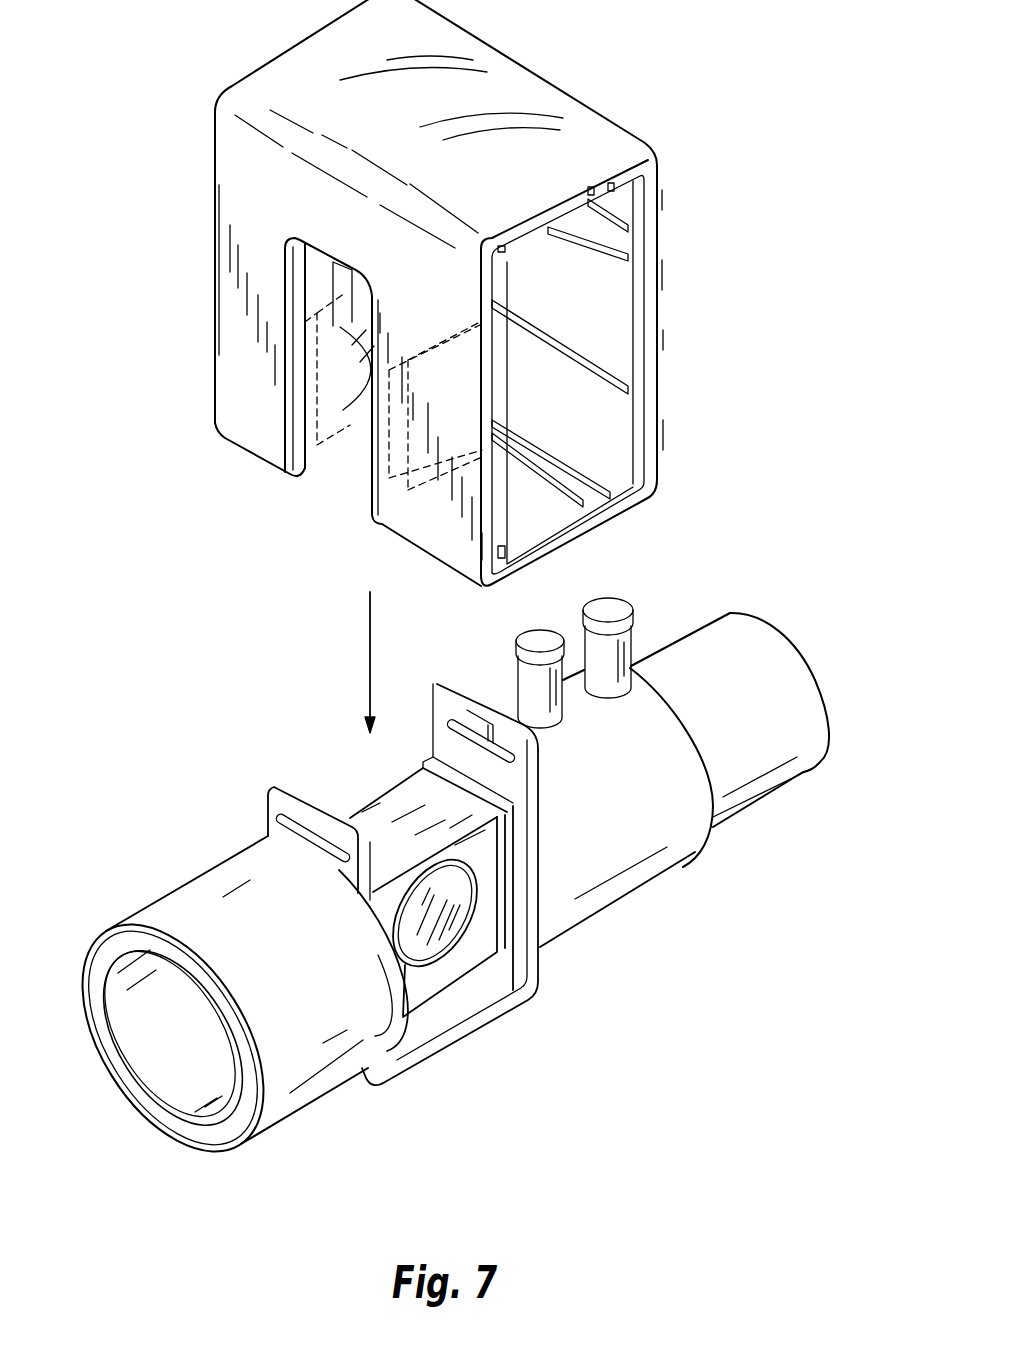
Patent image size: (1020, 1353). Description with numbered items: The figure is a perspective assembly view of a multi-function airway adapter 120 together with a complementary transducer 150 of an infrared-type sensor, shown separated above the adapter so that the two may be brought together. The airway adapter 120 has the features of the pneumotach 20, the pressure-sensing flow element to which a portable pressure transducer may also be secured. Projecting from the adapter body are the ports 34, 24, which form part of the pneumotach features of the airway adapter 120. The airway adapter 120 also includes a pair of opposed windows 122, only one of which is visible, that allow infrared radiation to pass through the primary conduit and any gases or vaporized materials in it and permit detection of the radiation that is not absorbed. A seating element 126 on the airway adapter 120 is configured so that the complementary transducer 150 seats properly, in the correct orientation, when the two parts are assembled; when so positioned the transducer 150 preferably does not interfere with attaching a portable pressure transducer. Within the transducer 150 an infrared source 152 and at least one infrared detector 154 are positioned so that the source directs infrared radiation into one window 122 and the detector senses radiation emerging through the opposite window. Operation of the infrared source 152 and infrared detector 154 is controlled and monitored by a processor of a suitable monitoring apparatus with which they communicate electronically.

The transducer 150 is at (173, 238).
The infrared detector 154 is at (283, 417).
The infrared source 152 is at (368, 493).
The multi-function airway adapter 120 is at (781, 571).
The port 34 is at (533, 640).
The port 24 is at (613, 605).
The pneumotach 20 is at (157, 1076).
The seating element 126 is at (293, 760).
The window 122 is at (432, 948).